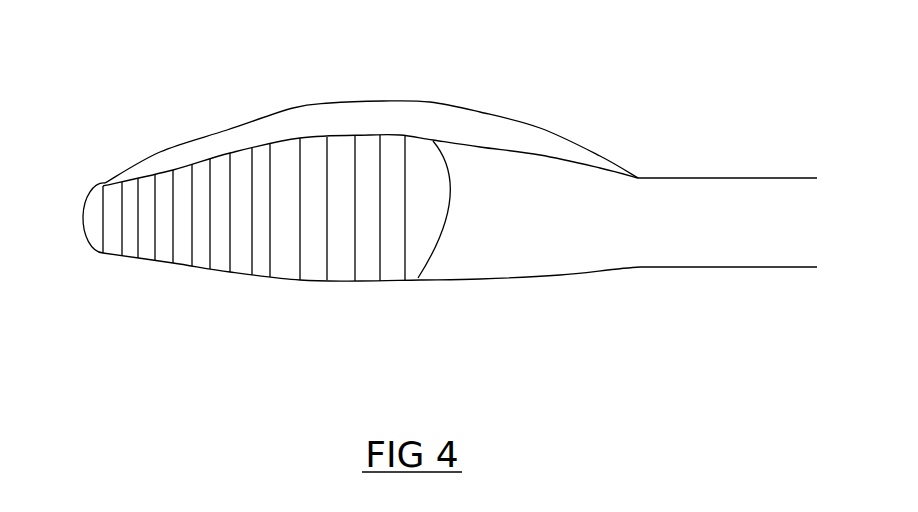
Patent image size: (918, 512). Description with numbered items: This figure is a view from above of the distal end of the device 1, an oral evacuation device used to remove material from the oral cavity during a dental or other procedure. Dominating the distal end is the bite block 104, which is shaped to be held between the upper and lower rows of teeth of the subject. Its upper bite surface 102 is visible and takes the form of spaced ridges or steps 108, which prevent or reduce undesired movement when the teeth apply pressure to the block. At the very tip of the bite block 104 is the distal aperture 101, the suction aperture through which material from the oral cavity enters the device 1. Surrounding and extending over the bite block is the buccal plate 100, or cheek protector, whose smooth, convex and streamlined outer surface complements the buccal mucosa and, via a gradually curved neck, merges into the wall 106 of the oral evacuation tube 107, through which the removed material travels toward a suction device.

The device 1 is at (424, 215).
The buccal plate 100 is at (465, 122).
The distal aperture 101 is at (103, 220).
The upper bite surface 102 is at (265, 167).
The bite block 104 is at (368, 267).
The wall 106 is at (702, 178).
The oral evacuation tube 107 is at (700, 267).
The spaced ridges/steps 108 is at (267, 267).